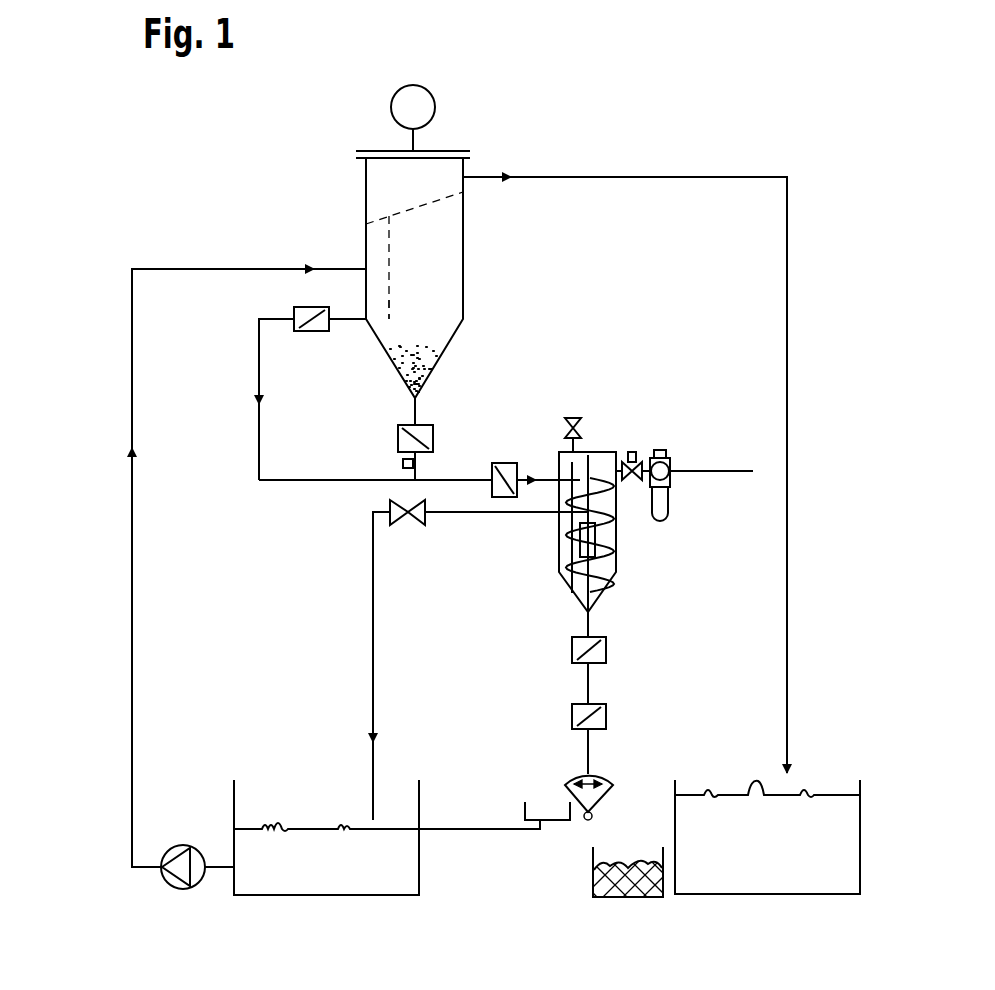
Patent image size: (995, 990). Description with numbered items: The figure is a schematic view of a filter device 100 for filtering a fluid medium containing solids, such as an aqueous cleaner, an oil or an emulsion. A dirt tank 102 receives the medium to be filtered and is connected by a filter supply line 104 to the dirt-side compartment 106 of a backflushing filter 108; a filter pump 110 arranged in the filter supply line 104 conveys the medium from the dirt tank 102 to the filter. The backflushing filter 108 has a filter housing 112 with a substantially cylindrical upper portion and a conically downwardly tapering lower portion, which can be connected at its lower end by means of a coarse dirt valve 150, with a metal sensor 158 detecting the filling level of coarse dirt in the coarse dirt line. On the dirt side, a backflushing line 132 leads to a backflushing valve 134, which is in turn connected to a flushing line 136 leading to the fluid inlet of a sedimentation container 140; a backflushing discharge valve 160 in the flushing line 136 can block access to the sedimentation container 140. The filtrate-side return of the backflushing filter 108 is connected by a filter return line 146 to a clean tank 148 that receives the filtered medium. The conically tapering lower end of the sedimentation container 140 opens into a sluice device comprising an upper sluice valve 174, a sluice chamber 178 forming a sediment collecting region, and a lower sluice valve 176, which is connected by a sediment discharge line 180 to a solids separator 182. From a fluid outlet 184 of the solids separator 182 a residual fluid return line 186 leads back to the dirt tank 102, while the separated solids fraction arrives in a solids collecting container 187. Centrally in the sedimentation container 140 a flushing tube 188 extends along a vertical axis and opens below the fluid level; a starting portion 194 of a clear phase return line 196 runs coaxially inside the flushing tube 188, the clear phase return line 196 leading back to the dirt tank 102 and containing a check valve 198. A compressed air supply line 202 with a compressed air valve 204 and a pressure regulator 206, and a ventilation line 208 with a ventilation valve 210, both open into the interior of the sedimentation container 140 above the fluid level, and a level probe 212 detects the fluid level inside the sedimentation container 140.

The filter device 100 is at (616, 132).
The dirt tank 102 is at (323, 896).
The filter supply line 104 is at (130, 618).
The dirt-side compartment 106 is at (444, 269).
The backflushing filter 108 is at (338, 132).
The filter pump 110 is at (183, 892).
The filter housing 112 is at (470, 252).
The backflushing line 132 is at (391, 300).
The backflushing valve 134 is at (311, 334).
The flushing line 136 is at (312, 483).
The sedimentation container 140 is at (568, 580).
The filter return line 146 is at (790, 618).
The clean tank 148 is at (770, 894).
The coarse dirt valve 150 is at (436, 436).
The metal sensor 158 is at (402, 464).
The backflushing discharge valve 160 is at (505, 499).
The upper sluice valve 174 is at (608, 651).
The lower sluice valve 176 is at (608, 717).
The sluice chamber 178 is at (588, 682).
The sediment discharge line 180 is at (588, 752).
The solids separator 182 is at (557, 780).
The fluid outlet 184 is at (558, 824).
The residual fluid return line 186 is at (483, 830).
The solids collecting container 187 is at (628, 898).
The flushing tube 188 is at (620, 592).
The starting portion 194 is at (614, 551).
The clear phase return line 196 is at (378, 645).
The check valve 198 is at (408, 528).
The compressed air supply line 202 is at (737, 476).
The compressed air valve 204 is at (634, 452).
The pressure regulator 206 is at (670, 456).
The ventilation line 208 is at (571, 440).
The ventilation valve 210 is at (563, 420).
The level probe 212 is at (582, 460).